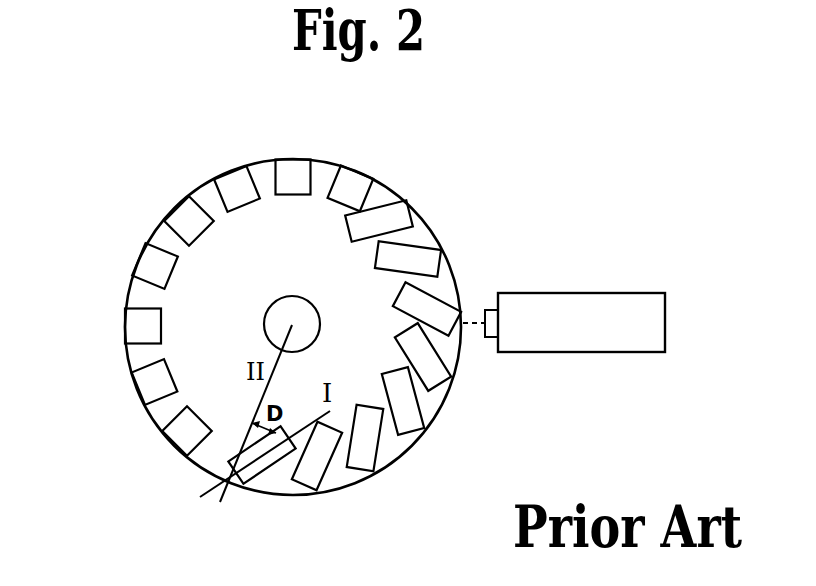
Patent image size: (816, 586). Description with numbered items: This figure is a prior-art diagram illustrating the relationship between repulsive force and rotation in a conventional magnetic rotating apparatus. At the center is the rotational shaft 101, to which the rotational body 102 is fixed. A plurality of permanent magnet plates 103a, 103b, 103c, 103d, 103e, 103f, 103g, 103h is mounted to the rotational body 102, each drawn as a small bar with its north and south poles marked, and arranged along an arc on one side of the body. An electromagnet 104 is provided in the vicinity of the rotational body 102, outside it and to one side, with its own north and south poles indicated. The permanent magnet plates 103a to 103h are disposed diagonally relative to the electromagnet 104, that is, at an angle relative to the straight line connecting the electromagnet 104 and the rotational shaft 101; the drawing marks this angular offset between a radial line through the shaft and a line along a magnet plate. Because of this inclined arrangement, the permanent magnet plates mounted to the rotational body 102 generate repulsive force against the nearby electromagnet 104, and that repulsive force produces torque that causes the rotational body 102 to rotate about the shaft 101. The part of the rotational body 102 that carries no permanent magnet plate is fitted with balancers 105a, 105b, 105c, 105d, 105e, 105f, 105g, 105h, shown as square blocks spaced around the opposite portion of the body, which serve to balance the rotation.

The rotational shaft 101 is at (285, 302).
The rotational body 102 is at (156, 232).
The permanent magnet plate 103a is at (243, 483).
The permanent magnet plate 103b is at (322, 488).
The permanent magnet plate 103c is at (385, 460).
The permanent magnet plate 103d is at (420, 420).
The permanent magnet plate 103e is at (453, 373).
The permanent magnet plate 103f is at (456, 296).
The permanent magnet plate 103g is at (433, 240).
The permanent magnet plate 103h is at (402, 202).
The electromagnet 104 is at (602, 302).
The balancer 105a is at (358, 182).
The balancer 105b is at (296, 178).
The balancer 105c is at (234, 180).
The balancer 105d is at (183, 207).
The balancer 105e is at (140, 268).
The balancer 105f is at (132, 328).
The balancer 105g is at (145, 392).
The balancer 105h is at (178, 440).